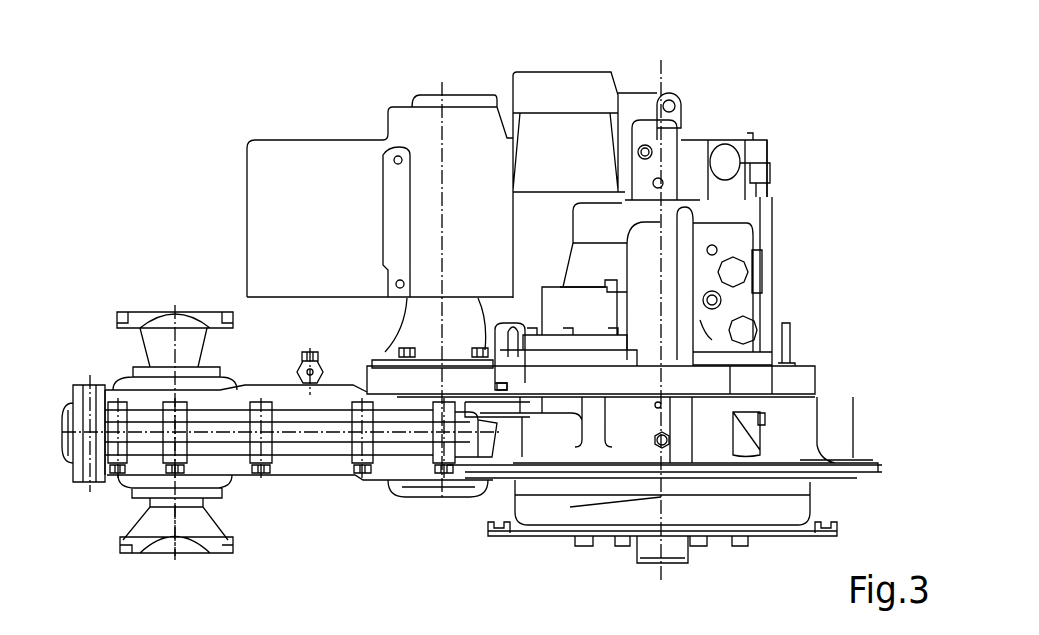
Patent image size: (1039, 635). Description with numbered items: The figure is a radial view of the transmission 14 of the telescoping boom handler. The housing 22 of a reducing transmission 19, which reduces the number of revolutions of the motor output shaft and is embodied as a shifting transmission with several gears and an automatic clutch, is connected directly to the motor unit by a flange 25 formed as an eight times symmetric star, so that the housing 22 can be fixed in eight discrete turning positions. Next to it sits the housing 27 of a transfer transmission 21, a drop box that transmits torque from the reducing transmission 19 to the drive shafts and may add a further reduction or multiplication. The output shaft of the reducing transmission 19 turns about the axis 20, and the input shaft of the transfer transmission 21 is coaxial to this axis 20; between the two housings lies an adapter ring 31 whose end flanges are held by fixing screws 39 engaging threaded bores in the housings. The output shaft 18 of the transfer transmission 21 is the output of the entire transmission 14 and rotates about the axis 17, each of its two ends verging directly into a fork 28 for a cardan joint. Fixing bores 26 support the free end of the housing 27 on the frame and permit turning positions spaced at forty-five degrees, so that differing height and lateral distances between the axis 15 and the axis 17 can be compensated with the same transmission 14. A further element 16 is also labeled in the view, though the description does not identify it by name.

The transmission 14 is at (302, 103).
The axis 15 is at (570, 507).
The drain fitting 16 is at (675, 553).
The axis 17 is at (177, 555).
The output shaft 18 is at (152, 523).
The reducing transmission 19 is at (760, 223).
The axis 20 is at (433, 483).
The transfer transmission 21 is at (300, 470).
The housing 22 is at (797, 402).
The flange 25 is at (788, 536).
The fixing bores 26 is at (90, 462).
The housing 27 is at (333, 393).
The fork 28 is at (118, 316).
The adapter ring 31 is at (421, 350).
The fixing screws 39 is at (405, 348).